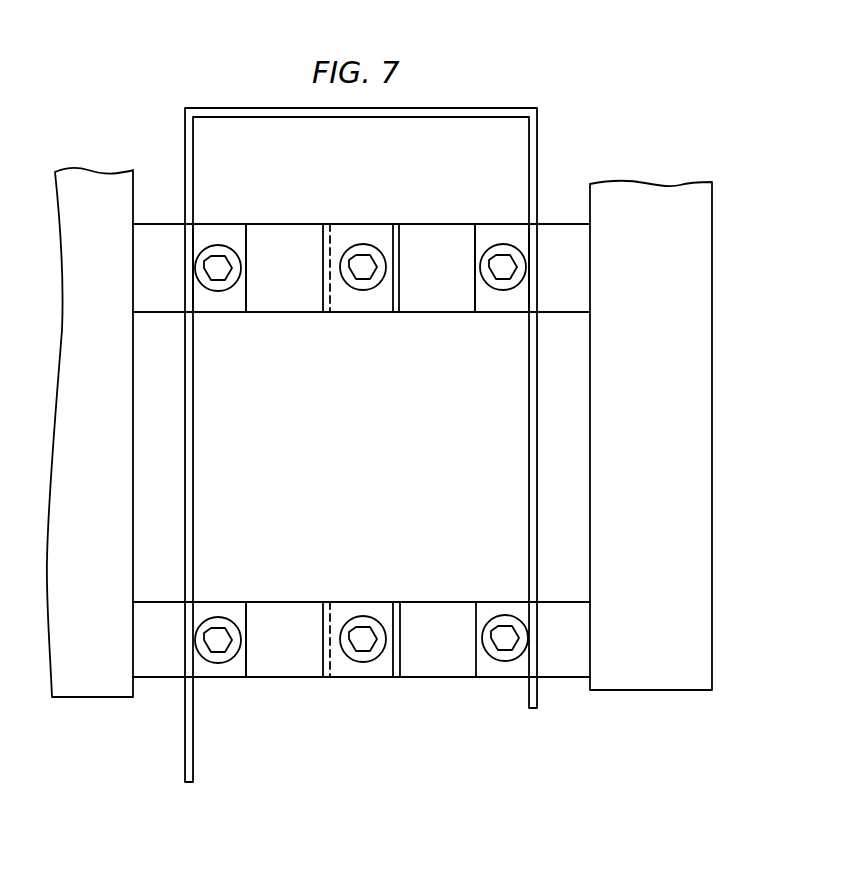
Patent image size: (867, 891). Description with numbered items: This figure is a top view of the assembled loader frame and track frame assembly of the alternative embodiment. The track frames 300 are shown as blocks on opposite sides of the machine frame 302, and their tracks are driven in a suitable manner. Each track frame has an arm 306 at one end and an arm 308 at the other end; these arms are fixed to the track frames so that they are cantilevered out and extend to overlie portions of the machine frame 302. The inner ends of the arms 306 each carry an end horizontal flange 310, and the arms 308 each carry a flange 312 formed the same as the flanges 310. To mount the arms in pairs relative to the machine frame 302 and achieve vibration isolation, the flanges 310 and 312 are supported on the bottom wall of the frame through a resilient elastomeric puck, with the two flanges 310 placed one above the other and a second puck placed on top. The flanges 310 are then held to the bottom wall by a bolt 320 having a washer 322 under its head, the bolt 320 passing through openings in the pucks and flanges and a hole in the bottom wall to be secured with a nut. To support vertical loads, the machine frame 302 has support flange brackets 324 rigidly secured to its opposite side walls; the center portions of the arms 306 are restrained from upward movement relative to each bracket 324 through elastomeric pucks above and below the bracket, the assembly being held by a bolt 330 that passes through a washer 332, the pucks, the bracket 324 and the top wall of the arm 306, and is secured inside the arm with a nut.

The track frame 300 is at (88, 655).
The machine frame 302 is at (539, 141).
The arm 306 is at (235, 604).
The arm 308 is at (250, 315).
The end horizontal flange 310 is at (342, 233).
The flange 312 is at (338, 295).
The bolt 320 is at (363, 255).
The washer 322 is at (352, 662).
The support flange bracket 324 is at (487, 297).
The bolt 330 is at (216, 262).
The washer 332 is at (236, 614).